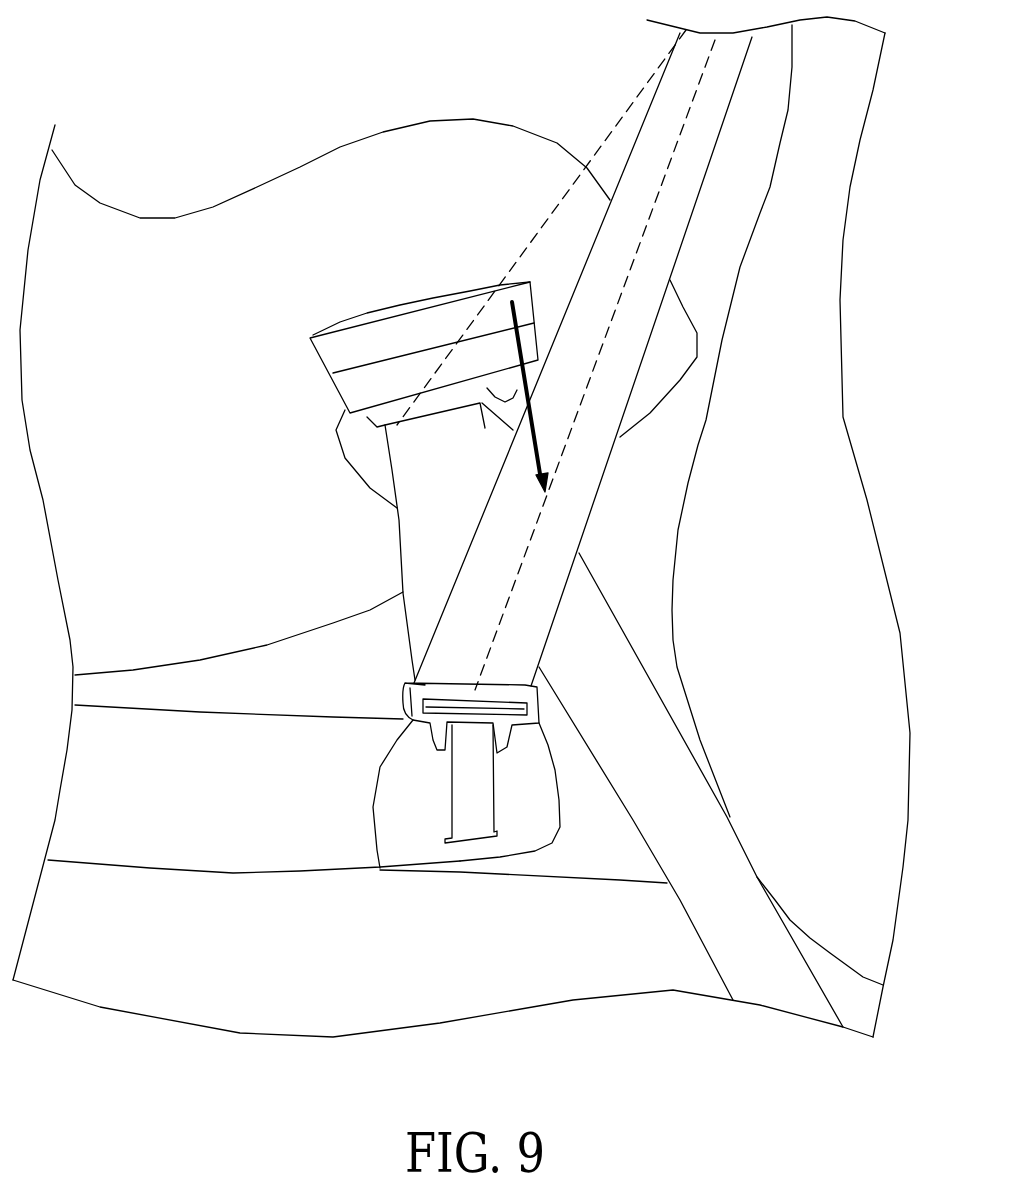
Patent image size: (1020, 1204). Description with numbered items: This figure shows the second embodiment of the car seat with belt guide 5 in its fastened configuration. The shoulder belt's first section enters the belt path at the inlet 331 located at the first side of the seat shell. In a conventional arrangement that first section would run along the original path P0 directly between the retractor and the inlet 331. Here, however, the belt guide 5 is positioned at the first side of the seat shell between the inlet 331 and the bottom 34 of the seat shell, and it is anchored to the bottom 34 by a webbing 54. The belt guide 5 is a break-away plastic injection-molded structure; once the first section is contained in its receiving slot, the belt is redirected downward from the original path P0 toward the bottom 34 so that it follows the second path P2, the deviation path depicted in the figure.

The inlet 331 is at (392, 418).
The belt guide 5 is at (463, 890).
The webbing 54 is at (474, 902).
The bottom 34 is at (443, 974).
The original path P0 is at (557, 204).
The second path P2 is at (690, 365).